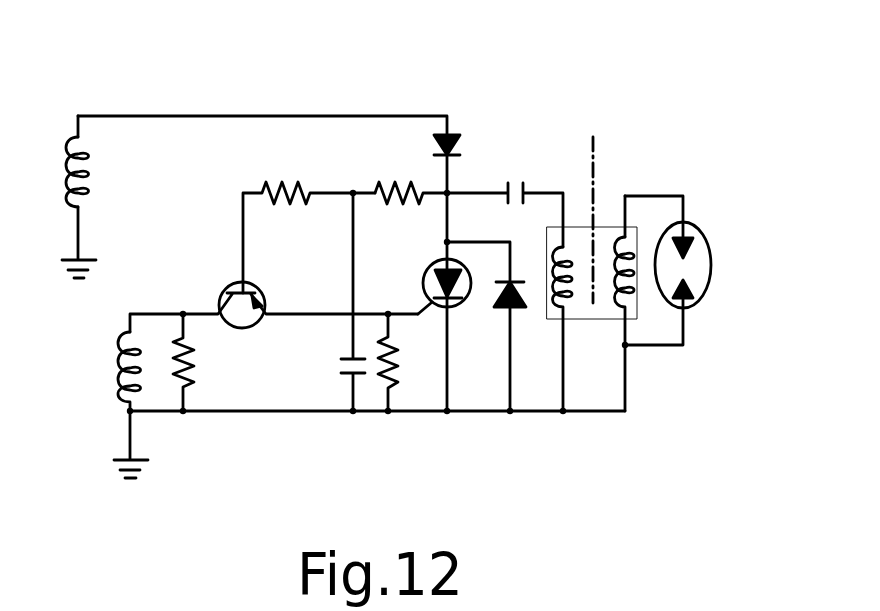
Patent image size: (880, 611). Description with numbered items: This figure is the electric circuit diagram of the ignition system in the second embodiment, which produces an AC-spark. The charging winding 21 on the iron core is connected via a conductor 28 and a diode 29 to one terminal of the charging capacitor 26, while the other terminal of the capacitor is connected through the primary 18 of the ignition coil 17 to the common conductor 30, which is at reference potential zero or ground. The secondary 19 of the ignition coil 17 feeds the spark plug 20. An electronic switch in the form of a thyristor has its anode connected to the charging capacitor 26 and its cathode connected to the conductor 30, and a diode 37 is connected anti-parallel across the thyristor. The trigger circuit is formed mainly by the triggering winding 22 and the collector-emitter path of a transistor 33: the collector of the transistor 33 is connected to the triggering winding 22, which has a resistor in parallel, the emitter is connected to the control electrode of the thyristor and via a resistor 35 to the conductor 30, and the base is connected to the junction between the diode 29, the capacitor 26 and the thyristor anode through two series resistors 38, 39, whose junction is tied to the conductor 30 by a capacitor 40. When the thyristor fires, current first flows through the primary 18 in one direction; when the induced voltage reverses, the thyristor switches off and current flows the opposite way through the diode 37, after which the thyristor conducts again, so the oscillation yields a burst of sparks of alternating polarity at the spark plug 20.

The ignition coil 17 is at (592, 210).
The primary 18 is at (562, 250).
The secondary 19 is at (628, 253).
The spark plug 20 is at (693, 225).
The charging winding 21 is at (68, 182).
The triggering winding 22 is at (120, 360).
The charging capacitor 26 is at (507, 183).
The conductor 28 is at (258, 117).
The diode 29 is at (458, 137).
The conductor 30 is at (278, 411).
The transistor 33 is at (260, 288).
The resistor 35 is at (397, 358).
The diode 37 is at (523, 285).
The resistor 38 is at (284, 183).
The resistor 39 is at (394, 183).
The capacitor 40 is at (341, 373).